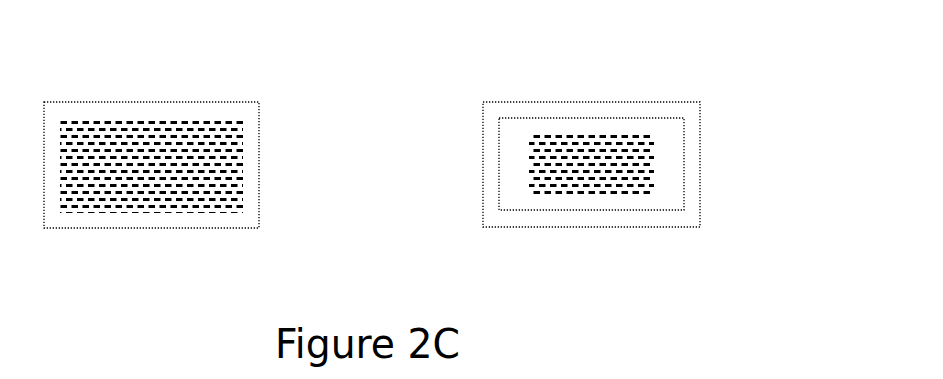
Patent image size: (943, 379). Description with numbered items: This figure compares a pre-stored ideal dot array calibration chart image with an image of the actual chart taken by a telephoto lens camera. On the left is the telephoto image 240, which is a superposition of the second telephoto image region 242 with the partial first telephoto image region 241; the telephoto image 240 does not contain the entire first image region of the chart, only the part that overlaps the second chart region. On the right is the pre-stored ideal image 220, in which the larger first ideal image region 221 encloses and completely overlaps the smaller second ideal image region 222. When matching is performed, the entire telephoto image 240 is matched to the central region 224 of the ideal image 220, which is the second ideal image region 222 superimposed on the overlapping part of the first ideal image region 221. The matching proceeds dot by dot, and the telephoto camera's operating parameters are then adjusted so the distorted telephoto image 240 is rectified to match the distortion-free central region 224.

The pre-stored ideal image 220 is at (598, 102).
The first ideal image region 221 is at (510, 210).
The second ideal image region 222 is at (607, 200).
The central region 224 is at (620, 178).
The telephoto image 240 is at (150, 102).
The partial first telephoto image region 241 is at (187, 210).
The second telephoto image region 242 is at (100, 210).